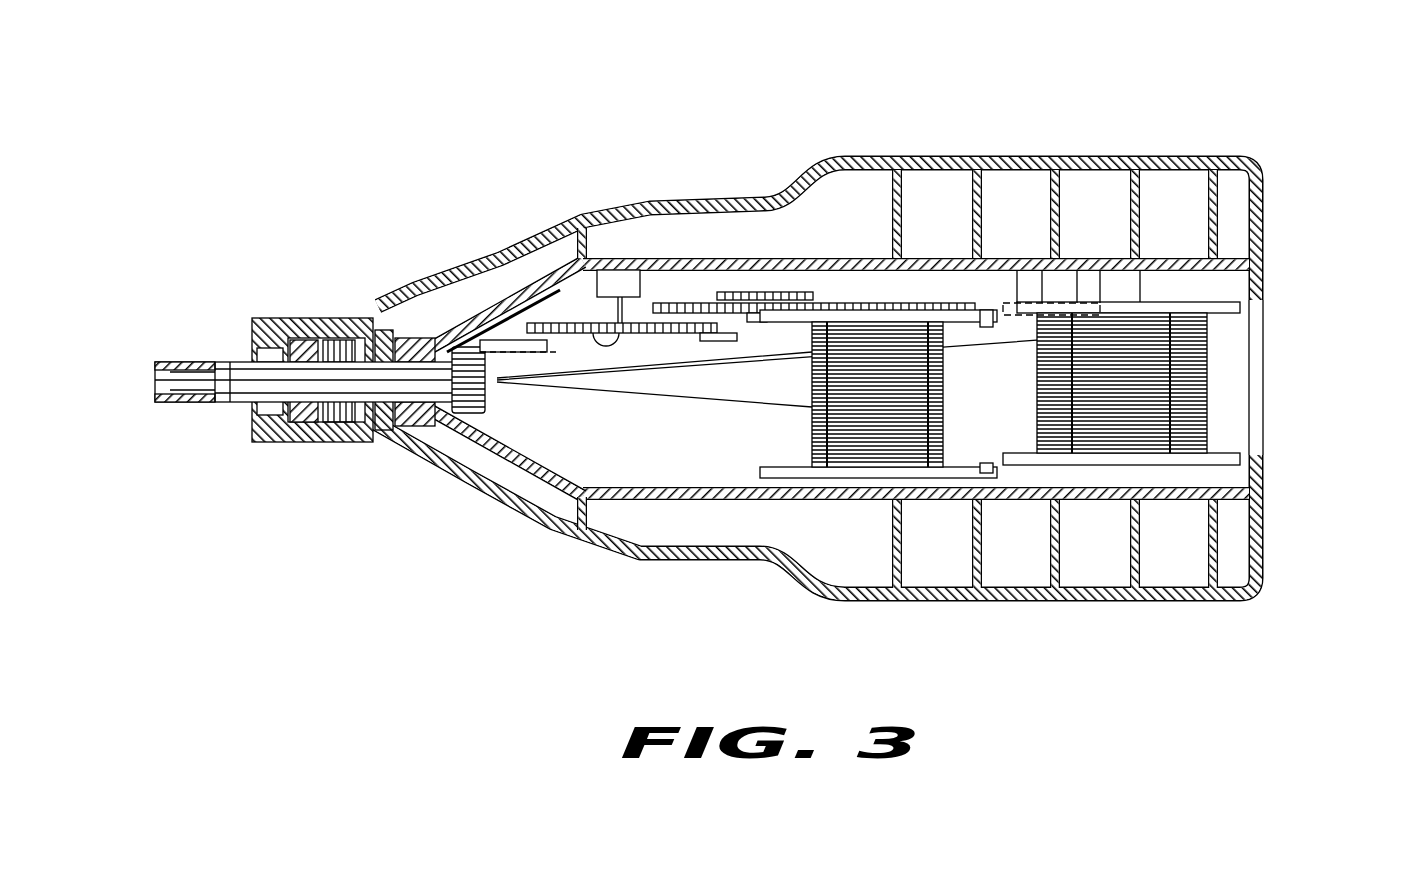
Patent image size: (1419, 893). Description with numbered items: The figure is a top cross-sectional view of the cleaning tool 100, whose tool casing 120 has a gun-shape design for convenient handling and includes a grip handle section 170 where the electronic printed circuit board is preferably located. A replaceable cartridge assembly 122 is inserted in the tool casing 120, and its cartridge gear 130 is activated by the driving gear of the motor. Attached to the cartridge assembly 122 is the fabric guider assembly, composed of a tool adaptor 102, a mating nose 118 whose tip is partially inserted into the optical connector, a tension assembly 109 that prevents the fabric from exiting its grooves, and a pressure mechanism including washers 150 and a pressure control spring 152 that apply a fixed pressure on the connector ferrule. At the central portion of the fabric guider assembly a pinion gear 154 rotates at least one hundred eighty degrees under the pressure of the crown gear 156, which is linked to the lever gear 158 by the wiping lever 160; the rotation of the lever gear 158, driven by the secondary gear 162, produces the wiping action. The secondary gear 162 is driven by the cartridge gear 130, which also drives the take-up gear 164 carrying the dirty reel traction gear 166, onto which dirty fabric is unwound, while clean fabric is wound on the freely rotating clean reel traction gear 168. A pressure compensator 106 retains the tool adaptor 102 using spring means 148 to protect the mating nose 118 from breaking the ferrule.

The cleaning tool 100 is at (741, 388).
The tool adaptor 102 is at (188, 360).
The pressure compensator 106 is at (290, 350).
The tension assembly 109 is at (378, 318).
The mating nose 118 is at (273, 325).
The tool casing 120 is at (630, 550).
The cartridge assembly 122 is at (1260, 281).
The cartridge gear 130 is at (775, 292).
The spring means 148 is at (333, 442).
The washers 150 is at (428, 427).
The pressure control spring 152 is at (415, 336).
The pinion gear 154 is at (484, 340).
The crown gear 156 is at (527, 352).
The lever gear 158 is at (686, 325).
The wiping lever 160 is at (606, 333).
The secondary gear 162 is at (745, 300).
The take-up gear 164 is at (912, 312).
The dirty reel traction gear 166 is at (855, 432).
The clean reel traction gear 168 is at (1195, 388).
The grip handle section 170 is at (1068, 300).